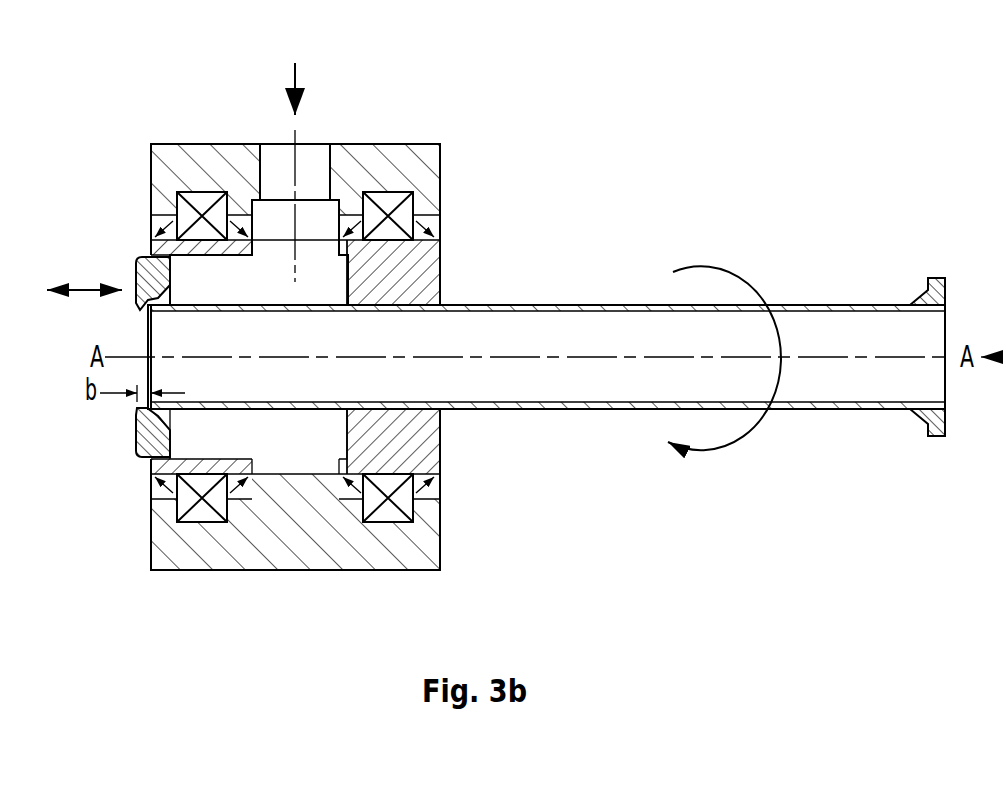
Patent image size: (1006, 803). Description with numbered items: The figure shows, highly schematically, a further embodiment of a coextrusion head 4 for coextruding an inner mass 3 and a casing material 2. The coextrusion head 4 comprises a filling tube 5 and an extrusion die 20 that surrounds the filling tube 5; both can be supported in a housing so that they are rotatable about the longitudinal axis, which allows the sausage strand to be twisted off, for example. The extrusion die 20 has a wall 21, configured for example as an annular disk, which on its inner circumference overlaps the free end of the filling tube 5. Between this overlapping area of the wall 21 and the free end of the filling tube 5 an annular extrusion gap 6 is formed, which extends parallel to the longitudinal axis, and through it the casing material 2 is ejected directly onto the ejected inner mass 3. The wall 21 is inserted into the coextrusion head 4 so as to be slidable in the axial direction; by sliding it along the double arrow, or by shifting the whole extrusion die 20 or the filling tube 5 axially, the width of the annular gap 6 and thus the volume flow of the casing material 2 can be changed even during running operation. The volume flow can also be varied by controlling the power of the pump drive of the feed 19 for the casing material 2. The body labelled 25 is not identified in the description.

The casing material 2 is at (213, 111).
The inner mass 3 is at (595, 349).
The coextrusion head 4 is at (534, 115).
The filling tube 5 is at (585, 411).
The annular extrusion gap 6 is at (148, 310).
The feed 19 is at (294, 78).
The extrusion die 20 is at (437, 267).
The wall 21 is at (142, 276).
The bearing sleeve 25 is at (266, 293).